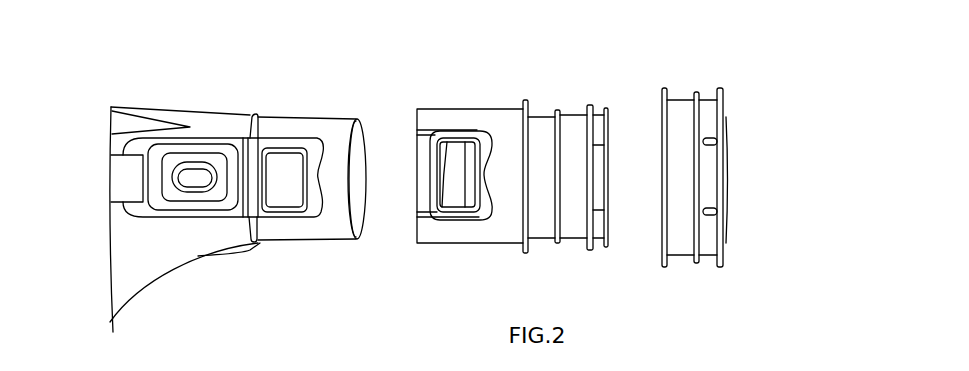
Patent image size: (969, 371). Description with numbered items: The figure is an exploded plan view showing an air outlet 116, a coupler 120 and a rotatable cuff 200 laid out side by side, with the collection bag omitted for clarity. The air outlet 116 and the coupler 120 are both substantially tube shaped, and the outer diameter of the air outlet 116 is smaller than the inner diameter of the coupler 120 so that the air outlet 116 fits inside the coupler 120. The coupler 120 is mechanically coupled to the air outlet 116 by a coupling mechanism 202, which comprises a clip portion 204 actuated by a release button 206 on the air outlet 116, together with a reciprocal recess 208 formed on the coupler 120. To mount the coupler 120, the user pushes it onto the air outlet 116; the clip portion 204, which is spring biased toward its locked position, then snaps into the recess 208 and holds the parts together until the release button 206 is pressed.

The coupling mechanism 202 is at (226, 95).
The air outlet 116 is at (360, 143).
The release button 206 is at (205, 178).
The clip portion 204 is at (298, 207).
The coupler 120 is at (503, 115).
The reciprocal recess 208 is at (470, 198).
The rotatable cuff 200 is at (680, 100).